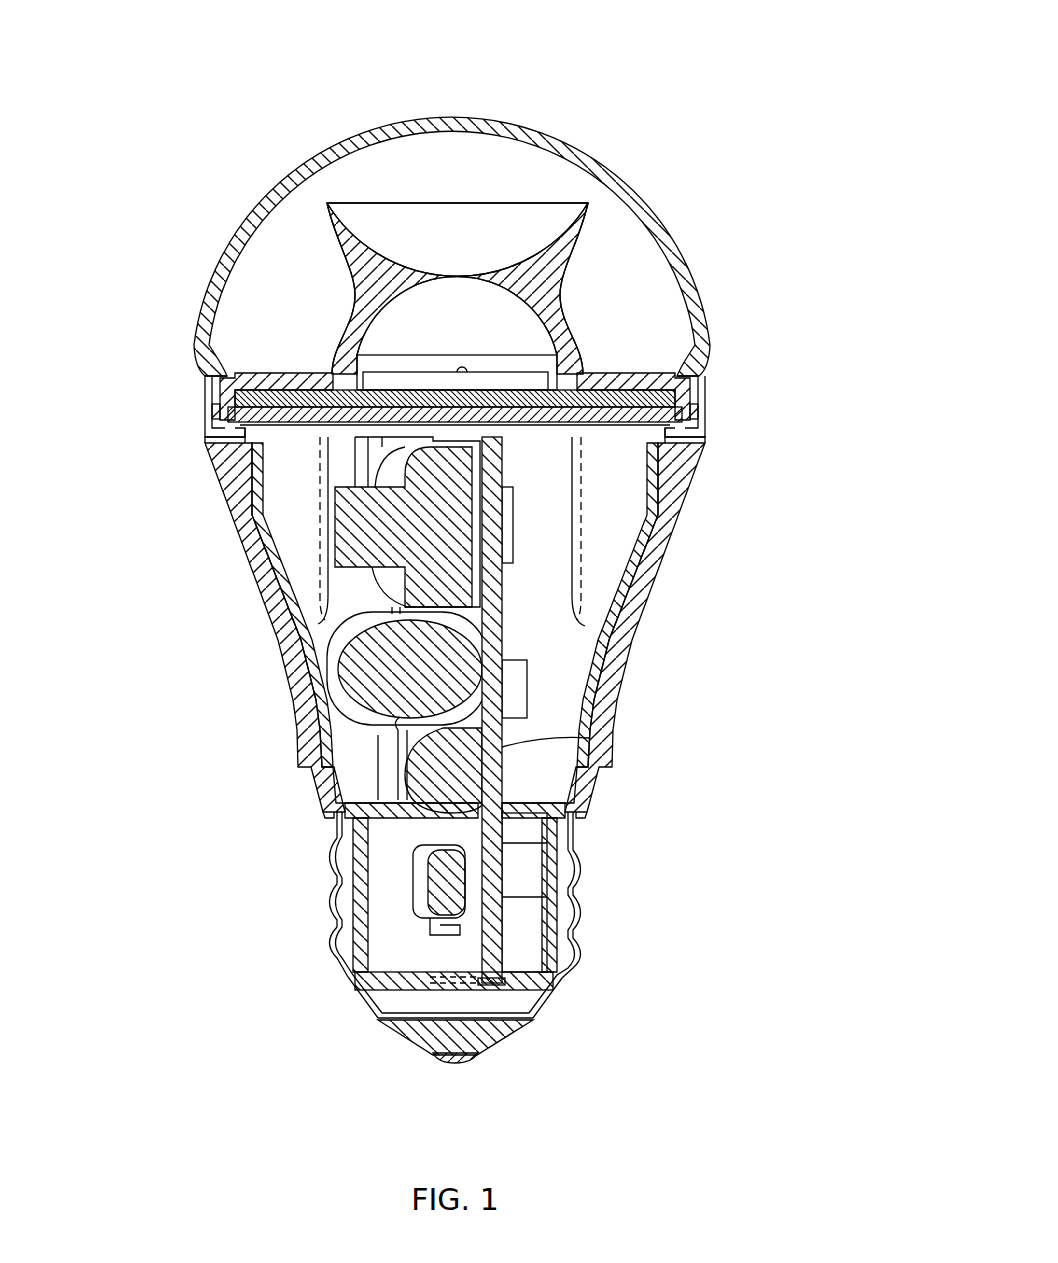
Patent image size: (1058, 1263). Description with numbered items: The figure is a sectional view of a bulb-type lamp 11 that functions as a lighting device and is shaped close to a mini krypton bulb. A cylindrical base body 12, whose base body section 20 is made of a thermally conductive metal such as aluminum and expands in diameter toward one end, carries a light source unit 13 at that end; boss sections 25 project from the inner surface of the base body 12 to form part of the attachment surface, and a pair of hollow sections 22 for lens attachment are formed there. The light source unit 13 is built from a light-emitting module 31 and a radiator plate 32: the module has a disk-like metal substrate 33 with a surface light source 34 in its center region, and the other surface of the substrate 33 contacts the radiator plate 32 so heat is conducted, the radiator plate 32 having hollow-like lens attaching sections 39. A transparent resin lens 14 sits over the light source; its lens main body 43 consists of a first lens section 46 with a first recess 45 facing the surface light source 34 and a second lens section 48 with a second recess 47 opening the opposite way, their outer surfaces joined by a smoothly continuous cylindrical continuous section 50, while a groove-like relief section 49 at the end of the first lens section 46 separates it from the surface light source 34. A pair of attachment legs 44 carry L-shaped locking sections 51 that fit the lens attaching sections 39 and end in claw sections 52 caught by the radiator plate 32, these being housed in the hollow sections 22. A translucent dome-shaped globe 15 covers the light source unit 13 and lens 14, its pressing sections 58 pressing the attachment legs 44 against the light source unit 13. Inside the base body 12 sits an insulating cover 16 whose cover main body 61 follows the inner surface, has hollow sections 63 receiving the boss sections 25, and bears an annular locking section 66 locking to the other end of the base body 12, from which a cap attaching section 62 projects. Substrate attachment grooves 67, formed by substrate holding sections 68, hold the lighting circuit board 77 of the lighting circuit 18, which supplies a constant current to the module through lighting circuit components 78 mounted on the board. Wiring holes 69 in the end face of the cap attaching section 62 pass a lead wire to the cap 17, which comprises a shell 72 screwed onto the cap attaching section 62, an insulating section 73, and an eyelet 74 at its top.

The bulb-type lamp 11 is at (453, 62).
The base body 12 is at (455, 627).
The light source unit 13 is at (350, 335).
The lens 14 is at (451, 232).
The globe 15 is at (255, 207).
The cover 16 is at (304, 703).
The cap 17 is at (461, 952).
The lighting circuit 18 is at (517, 606).
The base body section 20 is at (617, 708).
The hollow sections for lens attachment 22 is at (205, 435).
The boss sections 25 is at (288, 428).
The light-emitting module 31 is at (367, 377).
The radiator plate 32 is at (552, 415).
The substrate 33 is at (525, 398).
The surface light source 34 is at (572, 343).
The lens attaching sections 39 is at (211, 412).
The lens main body 43 is at (343, 262).
The attachment legs 44 is at (292, 372).
The first recess 45 is at (556, 320).
The first lens section 46 is at (567, 318).
The second recess 47 is at (548, 238).
The second lens section 48 is at (566, 226).
The relief section 49 is at (463, 367).
The continuous section 50 is at (352, 290).
The locking sections 51 is at (206, 392).
The claw sections 52 is at (240, 442).
The pressing sections 58 is at (215, 368).
The cover main body 61 is at (283, 562).
The cap attaching section 62 is at (360, 963).
The hollow sections 63 is at (317, 512).
The annular locking section 66 is at (315, 776).
The substrate attachment grooves 67 is at (500, 987).
The substrate holding sections 68 is at (399, 738).
The wiring holes 69 is at (420, 982).
The shell 72 is at (578, 913).
The insulating section 73 is at (488, 1040).
The eyelet 74 is at (453, 1064).
The lighting circuit board 77 is at (592, 748).
The lighting circuit components 78 is at (513, 515).